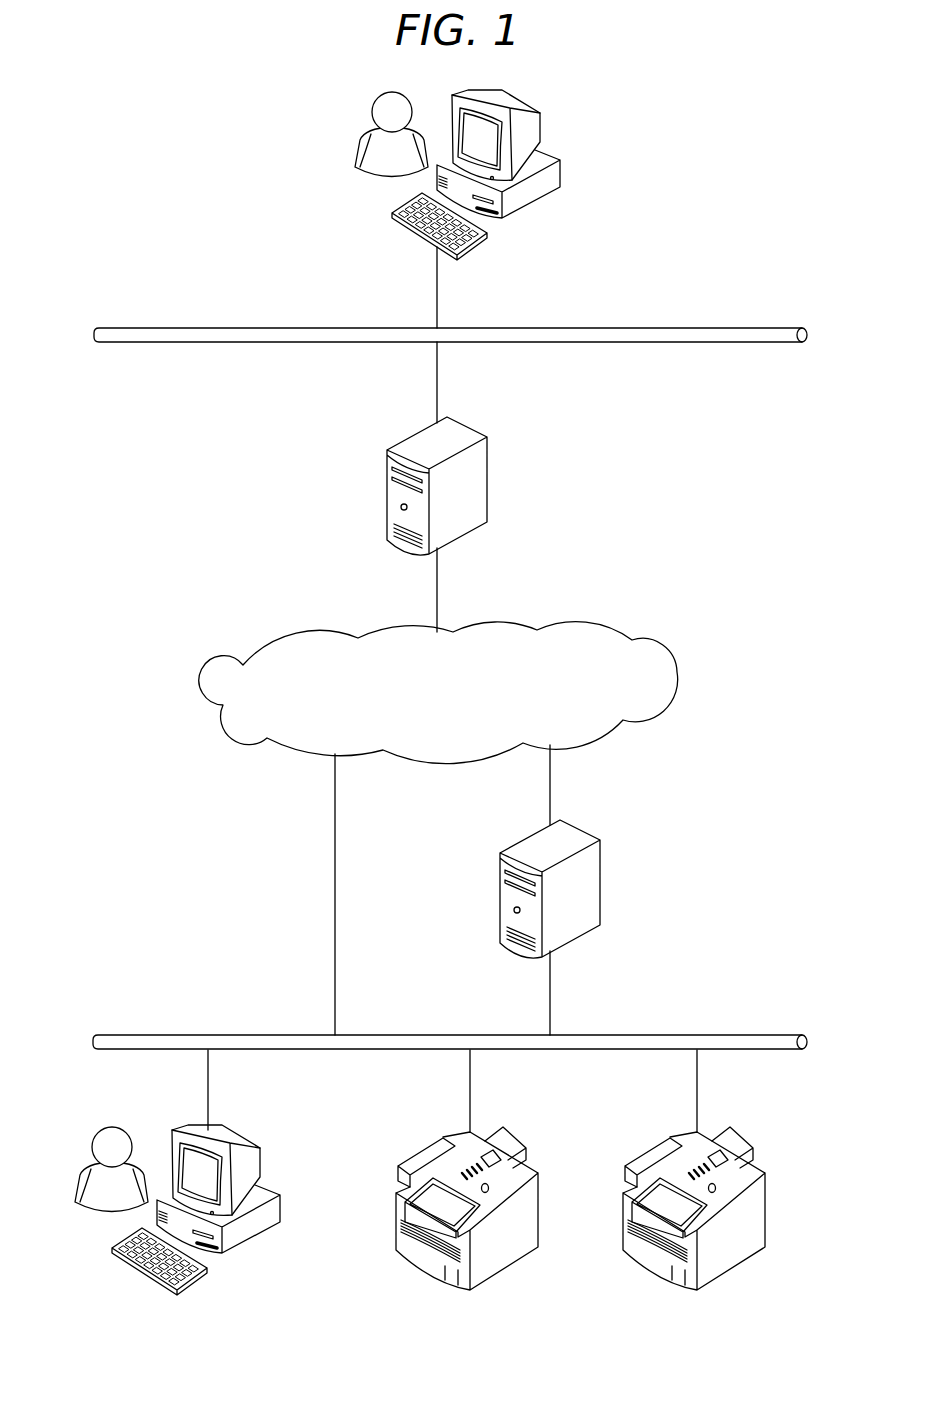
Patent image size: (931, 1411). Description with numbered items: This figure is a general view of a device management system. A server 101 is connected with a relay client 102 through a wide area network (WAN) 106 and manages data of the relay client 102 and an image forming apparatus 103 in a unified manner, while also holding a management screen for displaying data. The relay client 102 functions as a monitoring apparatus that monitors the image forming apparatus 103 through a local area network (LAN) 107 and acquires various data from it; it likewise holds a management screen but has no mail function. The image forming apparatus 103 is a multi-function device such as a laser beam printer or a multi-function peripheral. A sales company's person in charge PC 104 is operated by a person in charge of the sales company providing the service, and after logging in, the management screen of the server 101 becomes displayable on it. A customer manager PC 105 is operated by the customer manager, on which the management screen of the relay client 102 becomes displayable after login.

The server 101 is at (488, 478).
The relay client 102 is at (600, 877).
The image forming apparatus 103 is at (600, 1131).
The sales company's person in charge PC 104 is at (543, 130).
The customer manager PC 105 is at (268, 1160).
The wide area network (WAN) 106 is at (510, 623).
The local area network (LAN) 107 is at (682, 327).